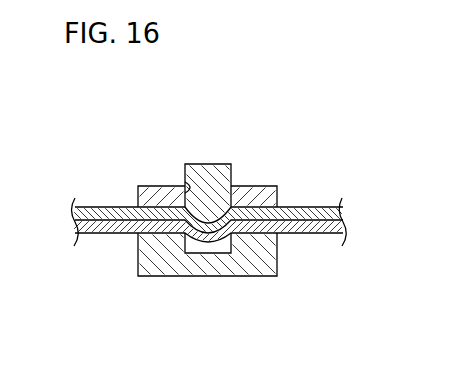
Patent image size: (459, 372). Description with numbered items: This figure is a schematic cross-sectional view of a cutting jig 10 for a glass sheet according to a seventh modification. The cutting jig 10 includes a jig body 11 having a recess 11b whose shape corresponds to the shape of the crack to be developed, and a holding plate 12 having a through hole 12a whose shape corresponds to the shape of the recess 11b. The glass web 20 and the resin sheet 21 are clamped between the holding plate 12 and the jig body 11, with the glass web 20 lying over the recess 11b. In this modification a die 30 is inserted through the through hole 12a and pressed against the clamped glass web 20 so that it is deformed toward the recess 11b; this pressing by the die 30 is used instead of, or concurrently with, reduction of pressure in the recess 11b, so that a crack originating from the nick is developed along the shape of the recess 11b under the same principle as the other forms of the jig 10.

The cutting jig 10 is at (229, 231).
The jig body 11 is at (207, 285).
The recess 11b is at (190, 246).
The holding plate 12 is at (205, 166).
The through hole 12a is at (188, 183).
The glass web 20 is at (217, 218).
The resin sheet 21 is at (333, 235).
The die 30 is at (208, 164).